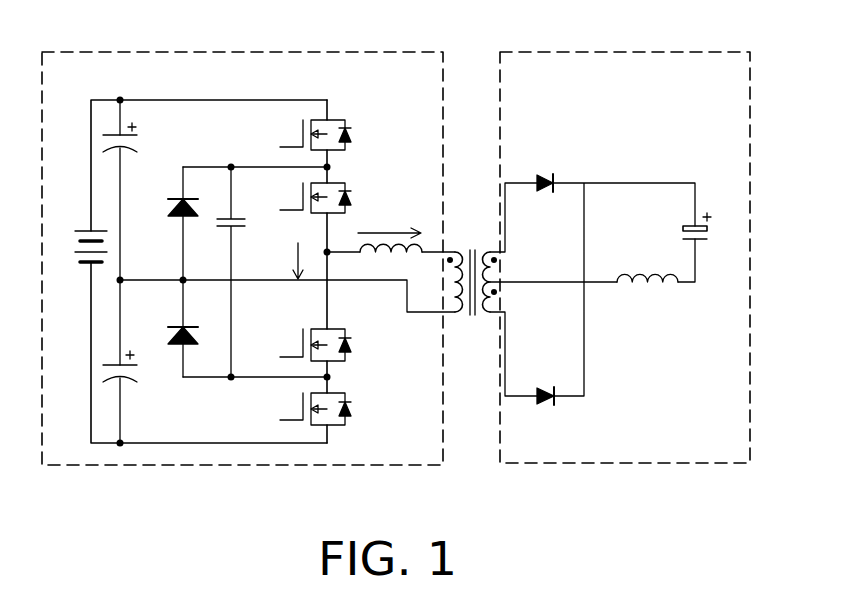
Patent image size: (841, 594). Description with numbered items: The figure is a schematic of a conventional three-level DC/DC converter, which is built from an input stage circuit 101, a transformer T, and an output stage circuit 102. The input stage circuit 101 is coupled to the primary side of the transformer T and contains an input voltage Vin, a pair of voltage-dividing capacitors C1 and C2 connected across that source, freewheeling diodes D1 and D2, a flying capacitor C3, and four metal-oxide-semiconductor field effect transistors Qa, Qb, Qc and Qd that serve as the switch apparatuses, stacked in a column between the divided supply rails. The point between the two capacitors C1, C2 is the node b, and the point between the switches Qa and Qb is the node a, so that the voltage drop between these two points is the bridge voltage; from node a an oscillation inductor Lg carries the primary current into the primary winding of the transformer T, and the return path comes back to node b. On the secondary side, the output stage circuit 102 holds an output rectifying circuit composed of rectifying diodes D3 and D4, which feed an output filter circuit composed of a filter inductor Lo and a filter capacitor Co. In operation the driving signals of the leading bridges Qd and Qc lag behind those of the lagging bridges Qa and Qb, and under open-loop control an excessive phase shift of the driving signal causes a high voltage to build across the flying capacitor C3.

The input stage circuit 101 is at (248, 236).
The output stage circuit 102 is at (620, 235).
The input voltage Vin is at (80, 232).
The voltage-dividing capacitor C1 is at (132, 130).
The voltage-dividing capacitor C2 is at (129, 355).
The flying capacitor C3 is at (221, 272).
The freewheeling diode D1 is at (172, 192).
The freewheeling diode D2 is at (172, 321).
The rectifying diode D3 is at (548, 205).
The rectifying diode D4 is at (547, 419).
The MOSFET Qa is at (311, 199).
The MOSFET Qb is at (311, 346).
The MOSFET Qc is at (311, 409).
The MOSFET Qd is at (311, 135).
The oscillation inductor Lg is at (392, 263).
The filter inductor Lo is at (647, 260).
The filter capacitor Co is at (689, 217).
The transformer T is at (472, 266).